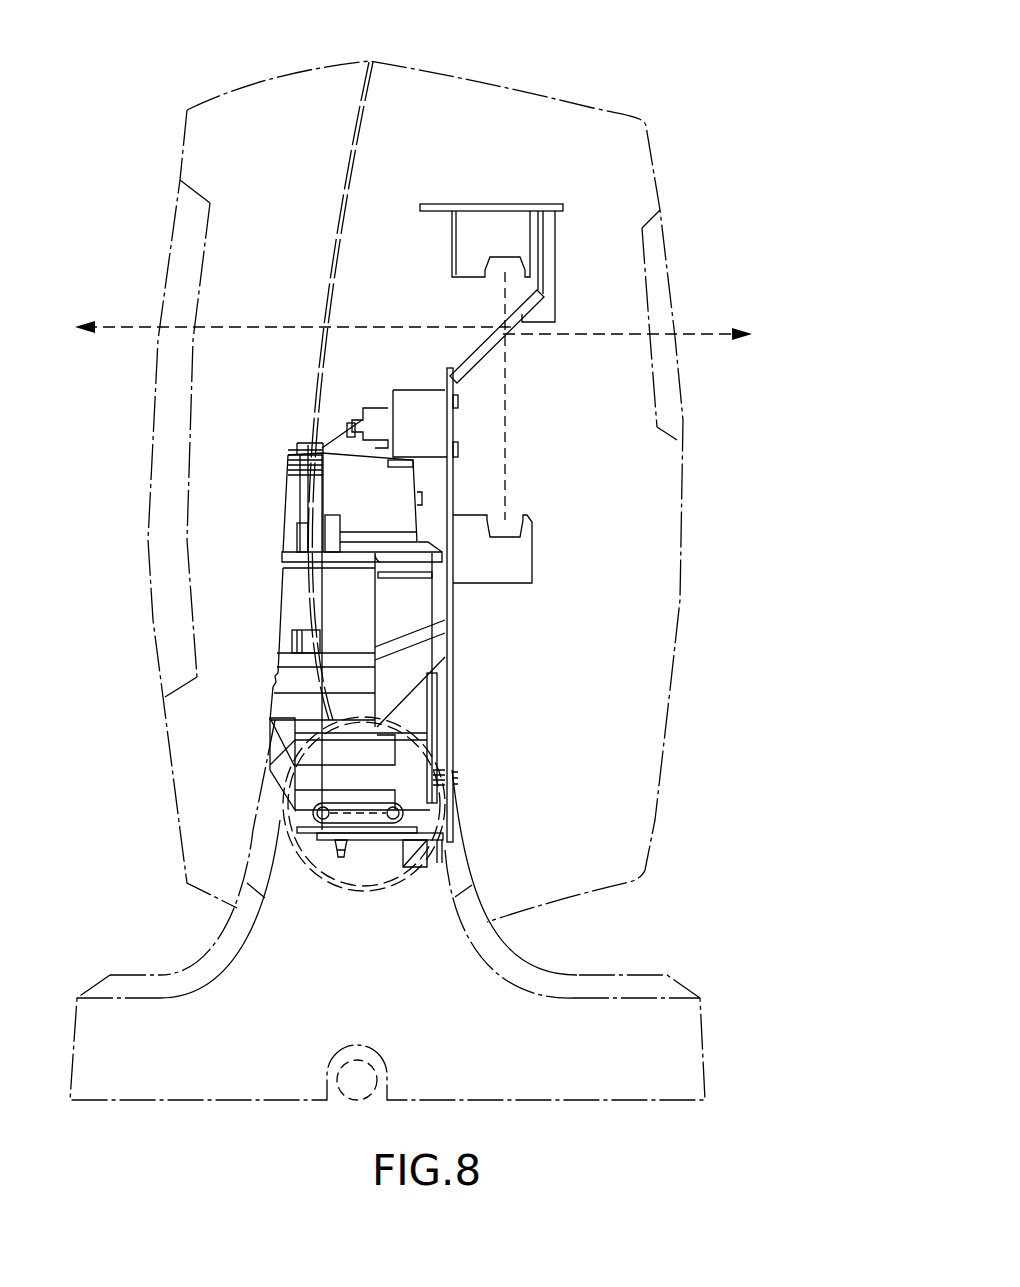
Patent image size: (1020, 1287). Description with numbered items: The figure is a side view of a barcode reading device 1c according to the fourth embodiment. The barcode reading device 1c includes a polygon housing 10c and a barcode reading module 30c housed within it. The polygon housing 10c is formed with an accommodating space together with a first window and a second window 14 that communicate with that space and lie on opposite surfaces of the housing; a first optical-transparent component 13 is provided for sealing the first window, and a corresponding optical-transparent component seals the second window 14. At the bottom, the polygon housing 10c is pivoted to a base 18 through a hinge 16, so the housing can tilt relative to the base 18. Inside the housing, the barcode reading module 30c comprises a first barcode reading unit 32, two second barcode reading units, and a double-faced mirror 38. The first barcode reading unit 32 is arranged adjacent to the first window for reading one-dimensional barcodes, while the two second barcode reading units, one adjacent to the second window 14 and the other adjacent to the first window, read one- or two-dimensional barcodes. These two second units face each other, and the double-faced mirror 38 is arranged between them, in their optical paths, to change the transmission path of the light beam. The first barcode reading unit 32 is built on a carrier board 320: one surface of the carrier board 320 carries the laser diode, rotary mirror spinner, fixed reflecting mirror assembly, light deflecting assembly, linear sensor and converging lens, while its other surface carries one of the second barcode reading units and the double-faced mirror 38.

The barcode reading device 1c is at (196, 35).
The polygon housing 10c is at (594, 108).
The first optical-transparent component 13 is at (157, 623).
The second window 14 is at (665, 250).
The hinge 16 is at (322, 860).
The base 18 is at (622, 1007).
The barcode reading module 30c is at (777, 287).
The first barcode reading unit 32 is at (423, 612).
The carrier board 320 is at (448, 727).
The double-faced mirror 38 is at (487, 357).